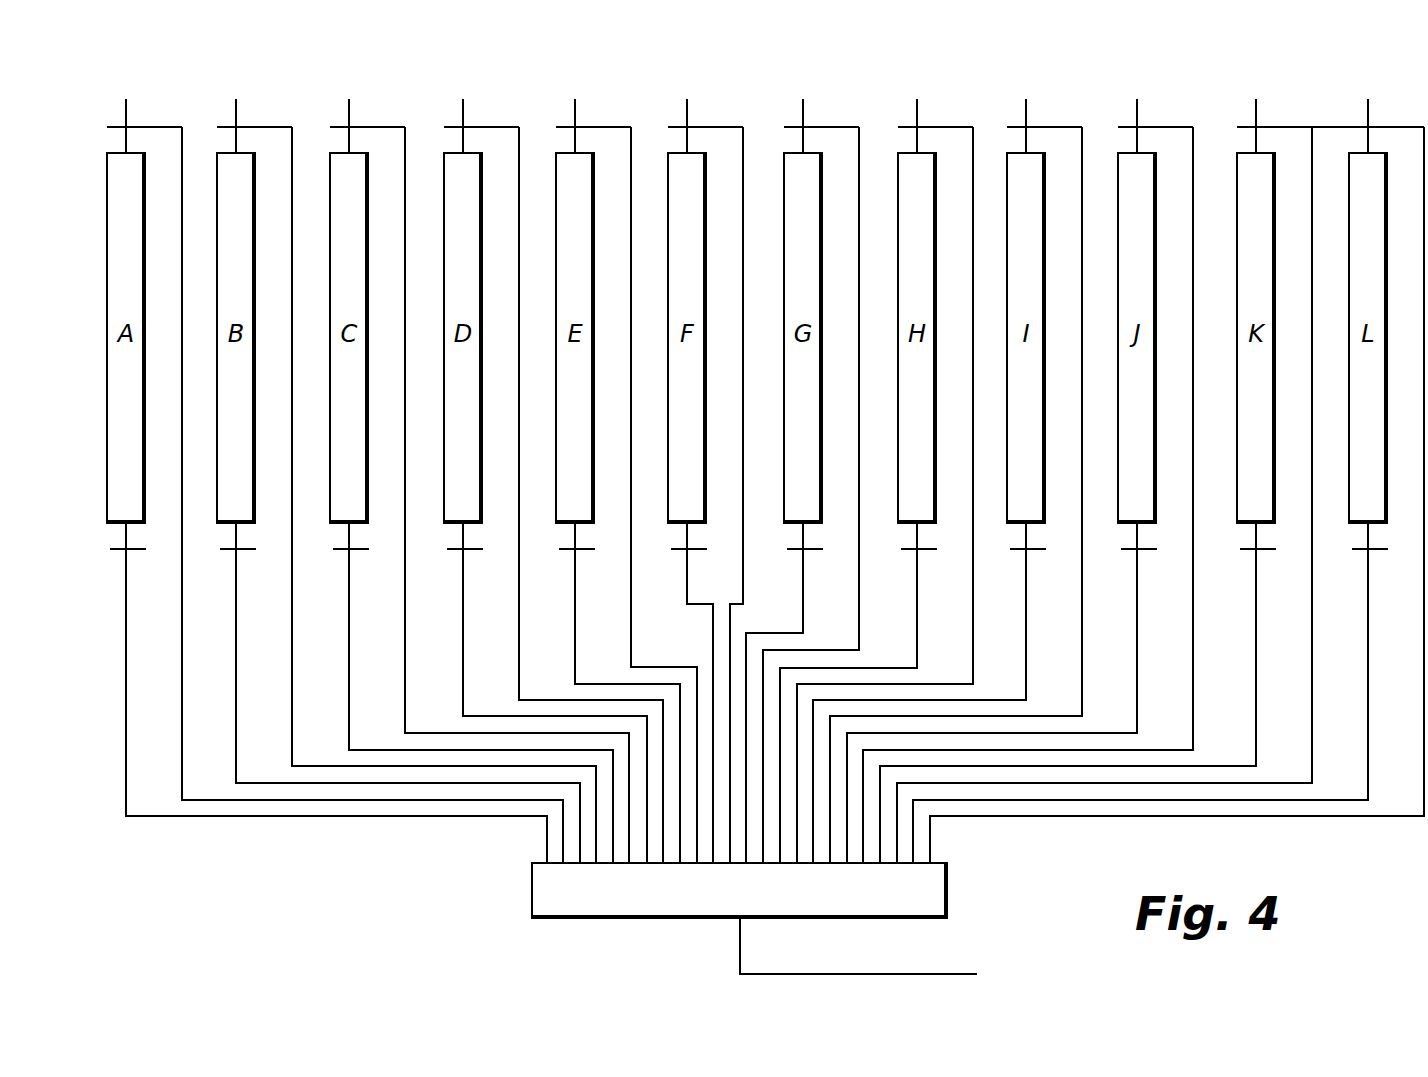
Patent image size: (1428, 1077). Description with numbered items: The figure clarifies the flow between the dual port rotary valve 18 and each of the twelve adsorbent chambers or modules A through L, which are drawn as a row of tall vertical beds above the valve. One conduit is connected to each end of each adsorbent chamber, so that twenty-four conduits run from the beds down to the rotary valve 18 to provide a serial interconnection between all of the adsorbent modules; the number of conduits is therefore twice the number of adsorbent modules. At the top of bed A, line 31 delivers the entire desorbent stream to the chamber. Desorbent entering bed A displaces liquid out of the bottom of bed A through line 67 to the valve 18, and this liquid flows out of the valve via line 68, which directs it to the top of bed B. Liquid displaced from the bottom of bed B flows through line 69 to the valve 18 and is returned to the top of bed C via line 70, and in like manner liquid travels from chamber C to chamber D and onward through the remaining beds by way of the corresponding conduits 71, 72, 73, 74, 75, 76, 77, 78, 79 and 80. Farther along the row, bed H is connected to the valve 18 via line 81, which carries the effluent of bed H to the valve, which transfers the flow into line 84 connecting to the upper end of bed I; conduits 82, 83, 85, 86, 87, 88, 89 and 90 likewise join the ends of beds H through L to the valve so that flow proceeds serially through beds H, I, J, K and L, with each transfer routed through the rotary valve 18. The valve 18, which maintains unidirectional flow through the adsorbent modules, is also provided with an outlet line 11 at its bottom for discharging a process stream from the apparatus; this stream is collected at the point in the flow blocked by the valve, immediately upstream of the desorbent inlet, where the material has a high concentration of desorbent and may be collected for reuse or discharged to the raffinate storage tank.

The outlet line 11 is at (882, 974).
The rotary valve 18 is at (948, 881).
The line 31 is at (126, 112).
The line 67 is at (126, 614).
The line 68 is at (163, 127).
The line 69 is at (236, 614).
The line 70 is at (273, 127).
The conduit 71 is at (349, 614).
The conduit 72 is at (386, 127).
The conduit 73 is at (463, 614).
The conduit 74 is at (500, 127).
The conduit 75 is at (575, 614).
The conduit 76 is at (612, 127).
The conduit 77 is at (687, 604).
The conduit 78 is at (724, 127).
The conduit 79 is at (803, 614).
The conduit 80 is at (840, 127).
The line 81 is at (917, 614).
The conduit 82 is at (954, 127).
The conduit 83 is at (1026, 614).
The line 84 is at (1063, 127).
The conduit 85 is at (1137, 614).
The conduit 86 is at (1174, 127).
The conduit 87 is at (1256, 614).
The conduit 88 is at (1293, 127).
The conduit 89 is at (1368, 614).
The conduit 90 is at (1404, 127).